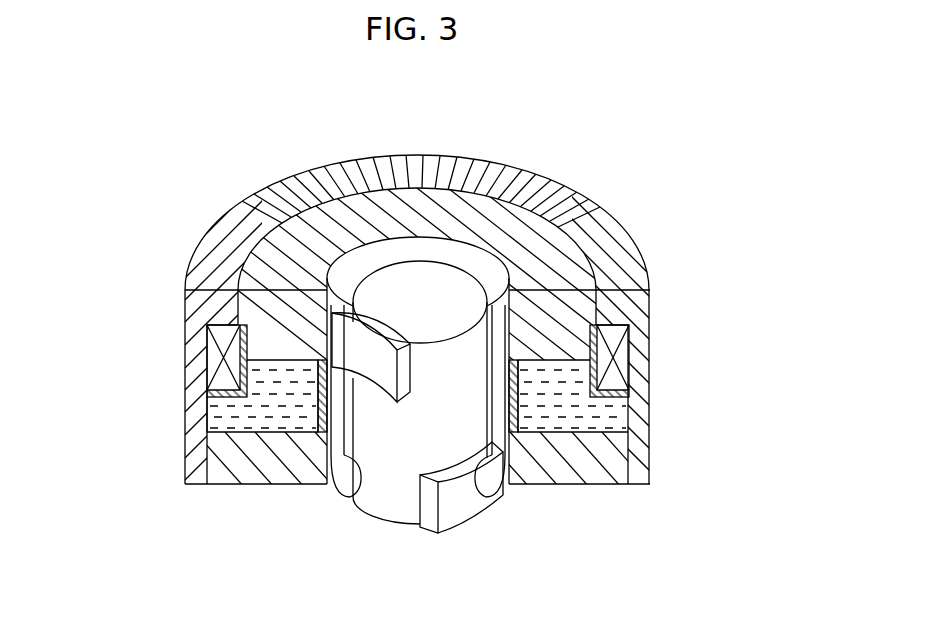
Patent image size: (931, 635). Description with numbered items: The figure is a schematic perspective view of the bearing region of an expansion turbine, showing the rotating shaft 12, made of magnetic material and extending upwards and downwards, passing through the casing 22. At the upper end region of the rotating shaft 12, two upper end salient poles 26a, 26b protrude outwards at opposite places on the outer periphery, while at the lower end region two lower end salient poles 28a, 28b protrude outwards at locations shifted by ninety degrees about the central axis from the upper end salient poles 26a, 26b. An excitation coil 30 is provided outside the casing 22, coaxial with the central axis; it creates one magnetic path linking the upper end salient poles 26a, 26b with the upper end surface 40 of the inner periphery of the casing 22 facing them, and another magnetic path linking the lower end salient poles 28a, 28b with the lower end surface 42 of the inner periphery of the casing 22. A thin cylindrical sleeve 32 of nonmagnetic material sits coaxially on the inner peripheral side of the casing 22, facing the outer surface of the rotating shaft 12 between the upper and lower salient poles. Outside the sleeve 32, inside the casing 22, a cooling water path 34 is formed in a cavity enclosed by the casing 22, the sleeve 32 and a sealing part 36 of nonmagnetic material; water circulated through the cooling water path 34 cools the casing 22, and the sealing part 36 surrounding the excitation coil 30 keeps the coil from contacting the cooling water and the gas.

The rotating shaft 12 is at (400, 508).
The casing 22 is at (580, 268).
The upper end salient pole 26a is at (463, 258).
The upper end salient pole 26b is at (362, 338).
The lower end salient pole 28a is at (352, 498).
The lower end salient pole 28b is at (485, 503).
The excitation coil 30 is at (187, 342).
The sleeve 32 is at (323, 412).
The cooling water path 34 is at (187, 403).
The sealing part 36 is at (187, 366).
The upper end surface 40 is at (270, 243).
The lower end surface 42 is at (340, 455).